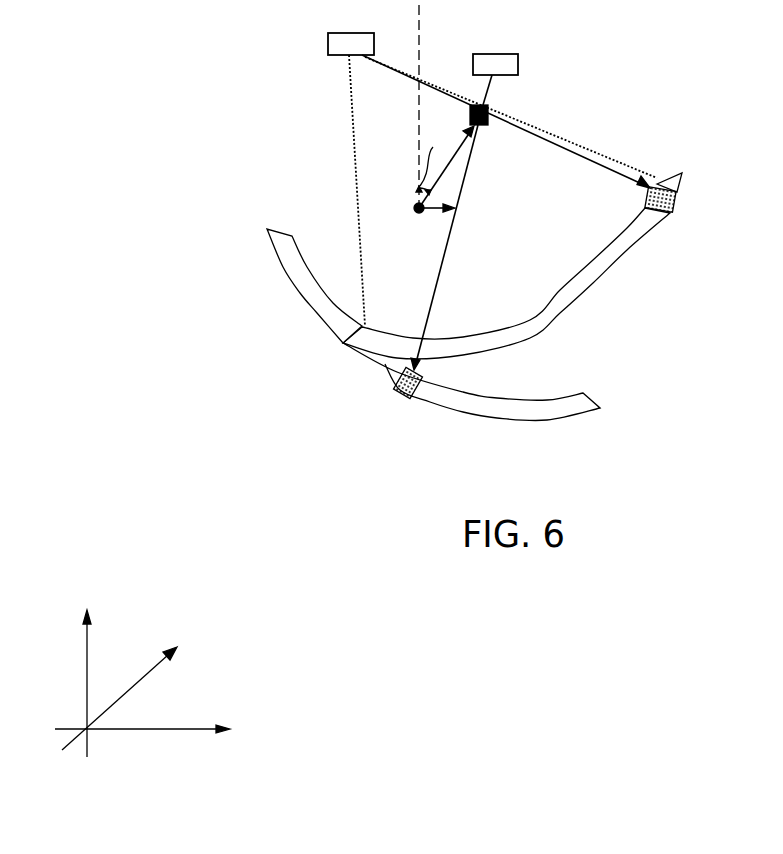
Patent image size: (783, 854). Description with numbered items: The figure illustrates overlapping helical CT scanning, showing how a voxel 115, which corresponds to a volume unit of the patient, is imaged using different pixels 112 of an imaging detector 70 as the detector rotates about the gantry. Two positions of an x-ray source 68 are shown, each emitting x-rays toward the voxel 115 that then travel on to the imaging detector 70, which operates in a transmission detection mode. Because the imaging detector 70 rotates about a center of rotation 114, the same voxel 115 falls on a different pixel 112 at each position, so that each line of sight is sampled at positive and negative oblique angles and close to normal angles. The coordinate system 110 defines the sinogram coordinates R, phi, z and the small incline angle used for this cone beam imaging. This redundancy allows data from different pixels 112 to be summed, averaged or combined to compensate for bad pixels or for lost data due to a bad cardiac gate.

The x-ray source 68 is at (328, 46).
The imaging detector 70 is at (582, 300).
The coordinate system 110 is at (144, 758).
The pixel 112 is at (677, 204).
The center of rotation 114 is at (417, 215).
The voxel 115 is at (483, 125).